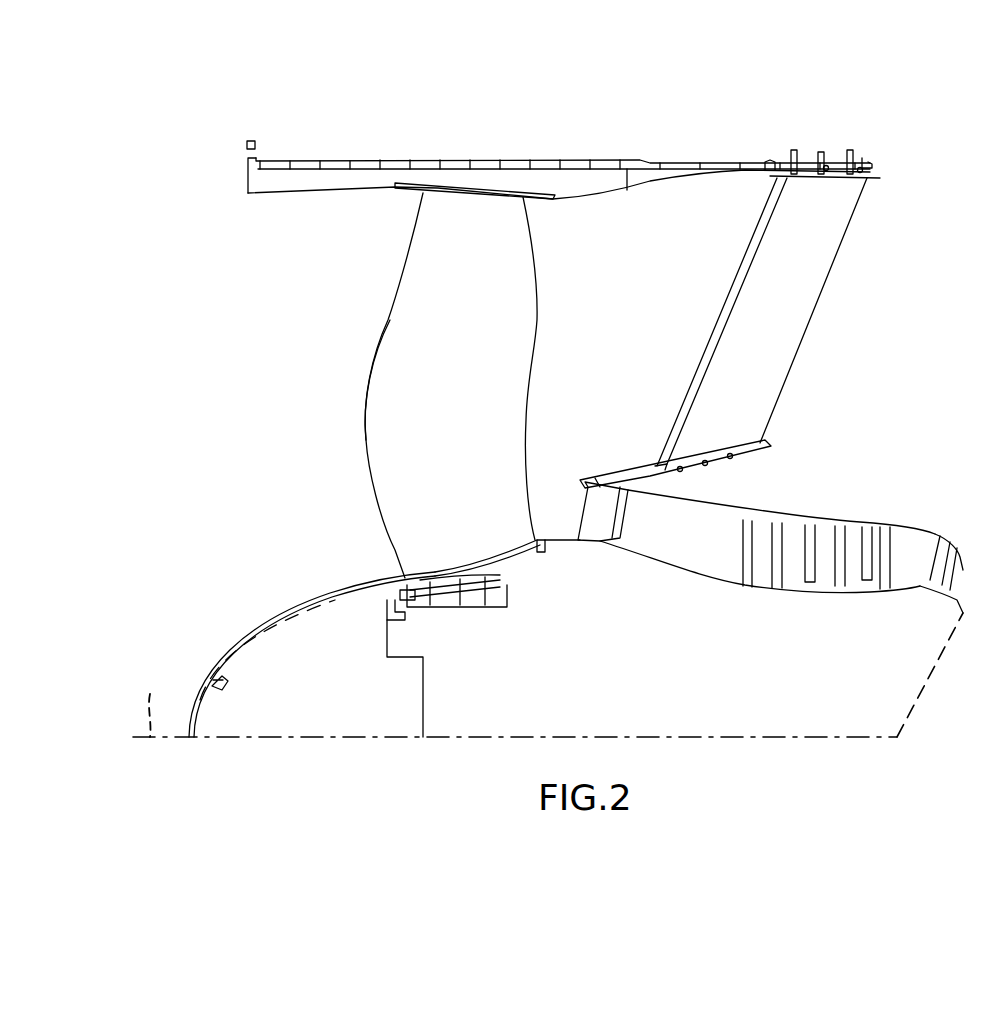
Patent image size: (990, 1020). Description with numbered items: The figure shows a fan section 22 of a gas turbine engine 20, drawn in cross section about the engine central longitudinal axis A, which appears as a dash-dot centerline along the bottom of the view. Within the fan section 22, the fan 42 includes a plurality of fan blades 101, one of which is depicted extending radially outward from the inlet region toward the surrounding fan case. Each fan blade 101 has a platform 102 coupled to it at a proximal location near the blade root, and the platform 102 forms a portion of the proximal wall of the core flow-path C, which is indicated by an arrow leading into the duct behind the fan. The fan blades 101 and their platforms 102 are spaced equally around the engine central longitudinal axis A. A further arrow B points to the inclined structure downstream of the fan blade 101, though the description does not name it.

The gas turbine engine 20 is at (196, 163).
The fan section 22 is at (740, 126).
The fan 42 is at (468, 373).
The fan blade 101 is at (373, 374).
The platform 102 is at (410, 575).
The engine central longitudinal axis A is at (548, 675).
The fan exit guide vane B is at (700, 298).
The core flow-path C is at (560, 503).